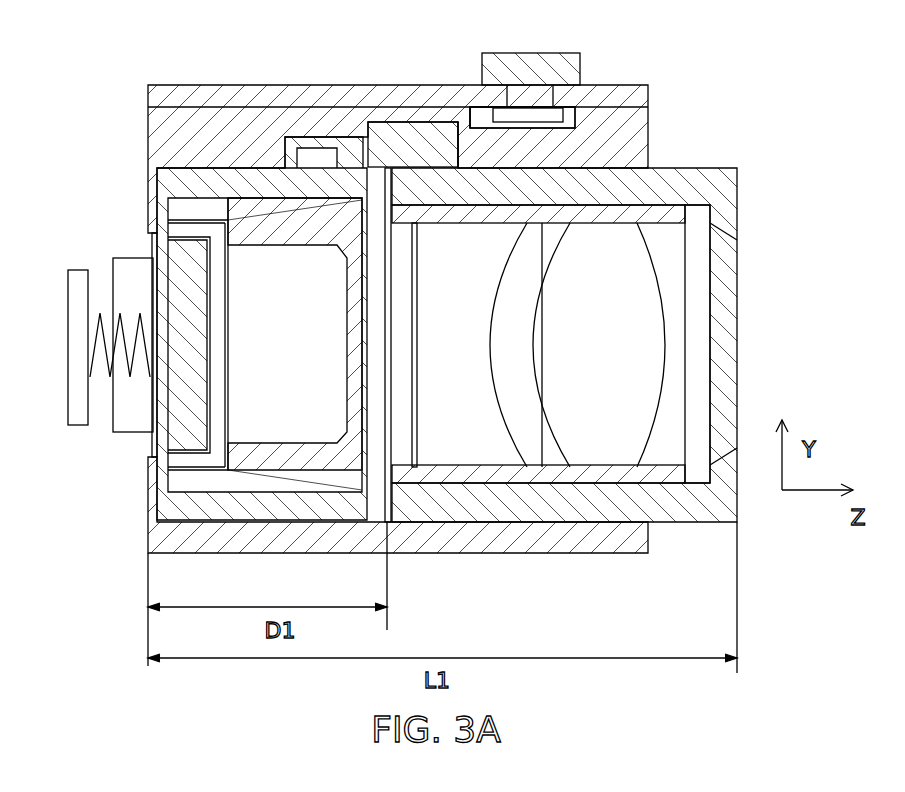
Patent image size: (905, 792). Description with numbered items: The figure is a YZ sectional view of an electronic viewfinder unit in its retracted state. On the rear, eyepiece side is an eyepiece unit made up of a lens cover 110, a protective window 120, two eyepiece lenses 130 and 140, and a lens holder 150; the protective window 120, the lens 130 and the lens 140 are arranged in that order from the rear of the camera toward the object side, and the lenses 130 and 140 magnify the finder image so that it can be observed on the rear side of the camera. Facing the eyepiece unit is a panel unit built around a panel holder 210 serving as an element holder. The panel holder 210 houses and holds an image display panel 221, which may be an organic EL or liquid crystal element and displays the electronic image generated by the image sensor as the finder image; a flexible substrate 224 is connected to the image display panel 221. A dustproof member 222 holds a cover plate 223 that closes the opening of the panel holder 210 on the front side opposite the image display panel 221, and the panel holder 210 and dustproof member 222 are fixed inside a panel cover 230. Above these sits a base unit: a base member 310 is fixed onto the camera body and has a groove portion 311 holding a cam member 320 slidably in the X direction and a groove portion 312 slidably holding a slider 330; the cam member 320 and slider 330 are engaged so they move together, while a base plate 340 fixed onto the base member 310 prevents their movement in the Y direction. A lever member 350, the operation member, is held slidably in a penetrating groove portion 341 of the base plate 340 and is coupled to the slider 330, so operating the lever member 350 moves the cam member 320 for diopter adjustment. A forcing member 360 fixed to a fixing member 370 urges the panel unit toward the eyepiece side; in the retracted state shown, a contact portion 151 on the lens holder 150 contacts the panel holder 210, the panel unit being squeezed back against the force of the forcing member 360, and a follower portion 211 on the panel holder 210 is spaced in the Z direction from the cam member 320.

The lens cover 110 is at (583, 311).
The protective window 120 is at (755, 337).
The lens 130 is at (660, 345).
The lens 140 is at (541, 410).
The lens holder 150 is at (564, 406).
The contact portion 151 is at (463, 421).
The panel holder 210 is at (224, 317).
The follower portion 211 is at (298, 99).
The image display panel 221 is at (214, 419).
The dustproof member 222 is at (265, 399).
The cover plate 223 is at (421, 397).
The flexible substrate 224 is at (102, 315).
The panel cover 230 is at (105, 371).
The base member 310 is at (395, 292).
The groove portion 311 is at (420, 96).
The groove portion 312 is at (456, 76).
The cam member 320 is at (381, 96).
The slider 330 is at (577, 74).
The base plate 340 is at (453, 85).
The penetrating groove portion 341 is at (558, 64).
The lever member 350 is at (531, 57).
The forcing member 360 is at (81, 399).
The fixing member 370 is at (48, 326).